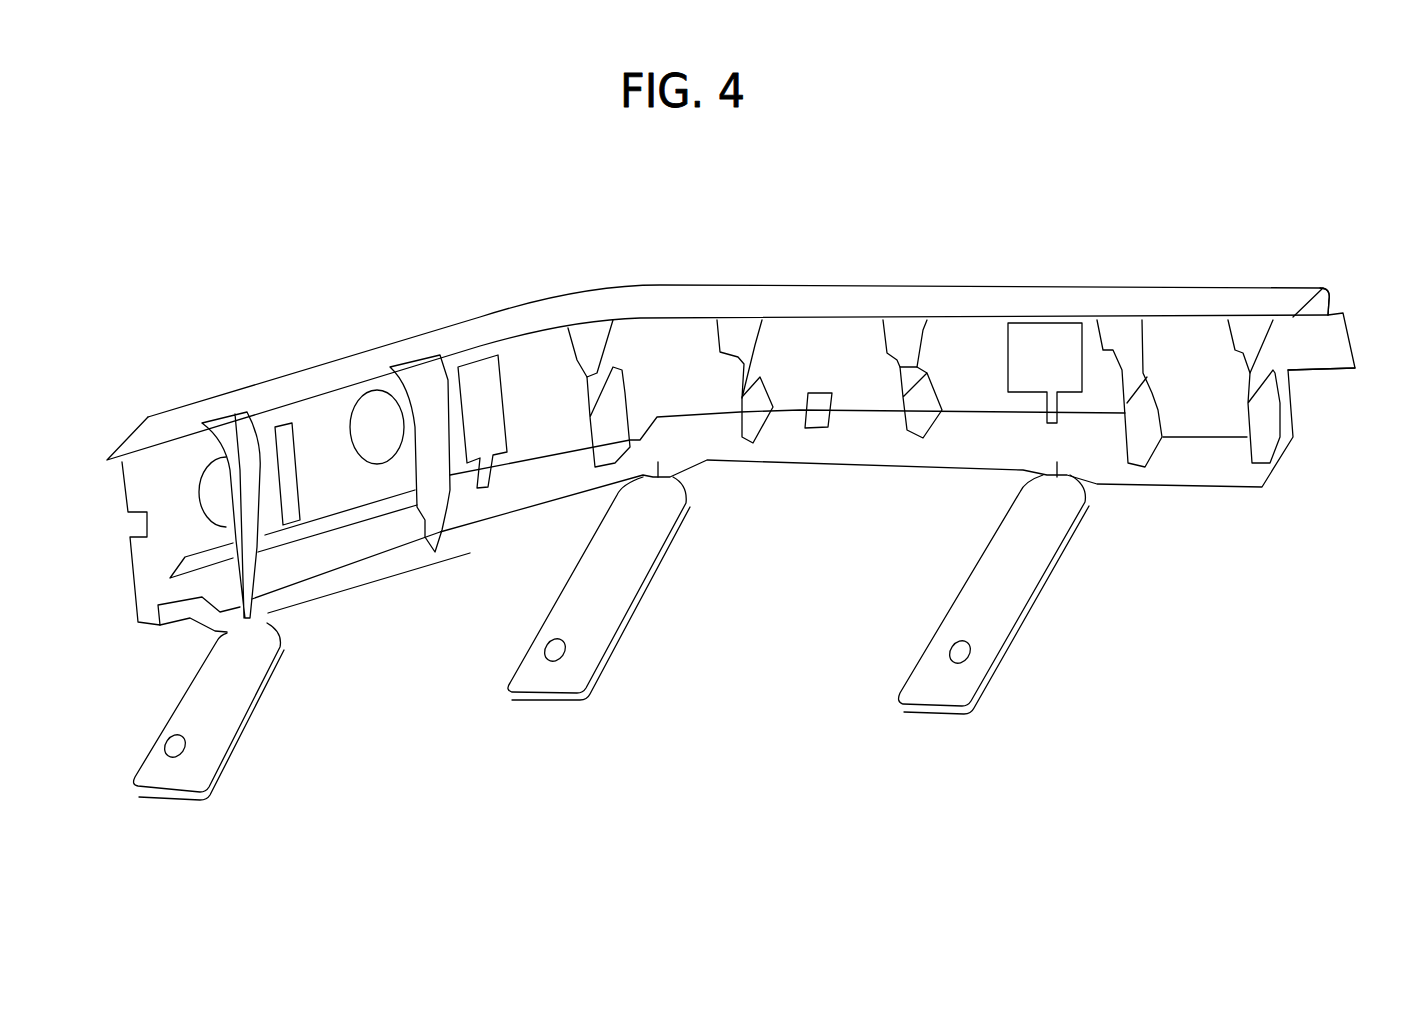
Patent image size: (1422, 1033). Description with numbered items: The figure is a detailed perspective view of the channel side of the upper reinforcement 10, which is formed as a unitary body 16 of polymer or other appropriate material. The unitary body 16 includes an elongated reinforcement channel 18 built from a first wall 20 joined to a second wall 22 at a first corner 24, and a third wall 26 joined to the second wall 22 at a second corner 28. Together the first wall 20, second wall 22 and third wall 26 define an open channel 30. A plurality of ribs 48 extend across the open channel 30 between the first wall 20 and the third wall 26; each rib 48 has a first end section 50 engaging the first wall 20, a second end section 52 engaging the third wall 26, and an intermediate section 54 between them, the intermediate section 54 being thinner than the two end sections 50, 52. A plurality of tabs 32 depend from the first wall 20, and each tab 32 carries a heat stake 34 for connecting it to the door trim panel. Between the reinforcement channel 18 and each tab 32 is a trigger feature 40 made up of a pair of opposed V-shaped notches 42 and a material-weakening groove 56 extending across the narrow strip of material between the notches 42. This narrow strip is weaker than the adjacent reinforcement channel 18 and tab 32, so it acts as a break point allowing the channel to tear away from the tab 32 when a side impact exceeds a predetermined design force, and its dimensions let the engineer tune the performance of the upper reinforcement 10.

The upper reinforcement 10 is at (500, 220).
The unitary body 16 is at (146, 624).
The reinforcement channel 18 is at (1303, 288).
The first wall 20 is at (867, 440).
The second wall 22 is at (830, 350).
The first corner 24 is at (987, 412).
The third wall 26 is at (1165, 305).
The second corner 28 is at (1007, 285).
The open channel 30 is at (567, 470).
The tab 32 is at (228, 700).
The heat stake 34 is at (180, 748).
The trigger feature 40 is at (1113, 500).
The V-shaped notch 42 is at (227, 633).
The rib 48 is at (430, 392).
The first end section 50 is at (1265, 412).
The second end section 52 is at (1248, 335).
The intermediate section 54 is at (1265, 363).
The material-weakening groove 56 is at (238, 420).